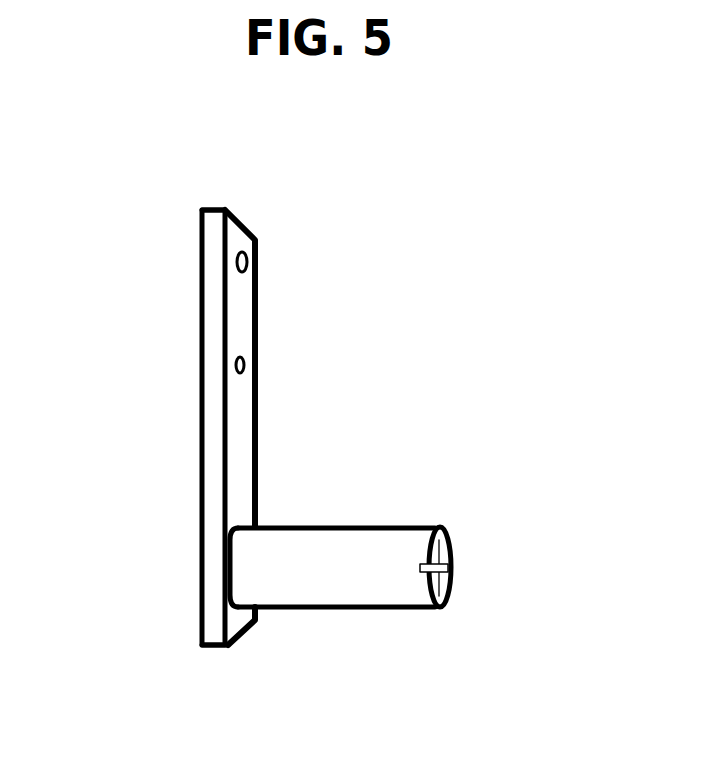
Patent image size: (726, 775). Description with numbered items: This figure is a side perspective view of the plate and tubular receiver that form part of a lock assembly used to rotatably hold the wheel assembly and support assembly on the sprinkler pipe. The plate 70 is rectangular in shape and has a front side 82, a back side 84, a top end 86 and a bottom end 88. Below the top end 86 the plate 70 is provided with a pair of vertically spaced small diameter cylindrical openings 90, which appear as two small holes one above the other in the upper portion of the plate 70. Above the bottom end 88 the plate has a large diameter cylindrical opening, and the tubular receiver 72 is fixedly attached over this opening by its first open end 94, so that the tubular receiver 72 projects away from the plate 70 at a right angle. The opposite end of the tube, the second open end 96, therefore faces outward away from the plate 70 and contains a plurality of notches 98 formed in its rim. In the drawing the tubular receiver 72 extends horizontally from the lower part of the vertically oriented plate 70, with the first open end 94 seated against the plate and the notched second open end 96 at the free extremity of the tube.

The plate 70 is at (237, 432).
The tubular receiver 72 is at (407, 604).
The front side 82 is at (258, 433).
The back side 84 is at (200, 462).
The top end 86 is at (220, 208).
The bottom end 88 is at (240, 646).
The small diameter cylindrical openings 90 is at (258, 263).
The first open end 94 is at (235, 562).
The second open end 96 is at (446, 604).
The notches 98 is at (449, 568).